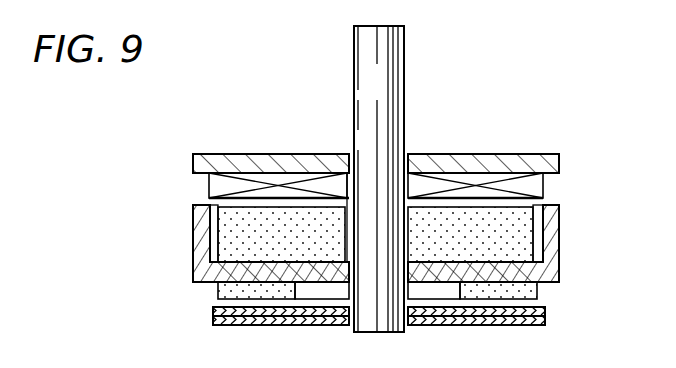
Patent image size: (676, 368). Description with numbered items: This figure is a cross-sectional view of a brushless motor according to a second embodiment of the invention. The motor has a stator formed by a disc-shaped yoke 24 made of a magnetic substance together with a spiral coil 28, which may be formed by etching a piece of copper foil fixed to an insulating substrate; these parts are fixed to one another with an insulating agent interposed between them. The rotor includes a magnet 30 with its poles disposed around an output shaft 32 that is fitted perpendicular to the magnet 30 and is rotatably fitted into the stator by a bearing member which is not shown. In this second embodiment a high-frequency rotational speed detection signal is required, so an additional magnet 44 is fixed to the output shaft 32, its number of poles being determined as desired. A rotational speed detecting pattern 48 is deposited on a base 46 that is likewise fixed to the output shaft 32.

The output shaft 32 is at (399, 98).
The yoke 24 is at (559, 160).
The spiral coil 28 is at (545, 184).
The magnet 30 is at (525, 237).
The magnet 44 is at (537, 291).
The rotational speed detecting pattern 48 is at (545, 312).
The base 46 is at (545, 322).